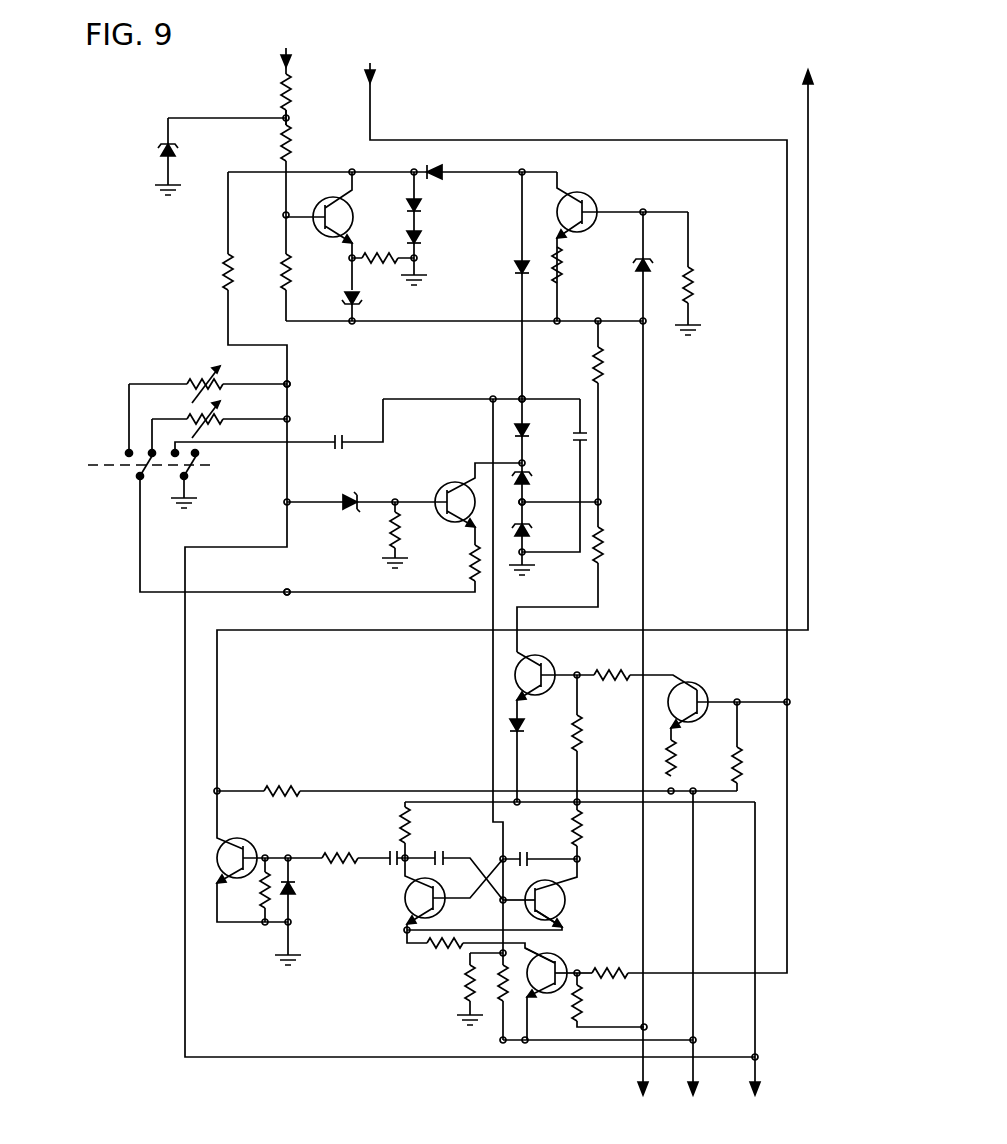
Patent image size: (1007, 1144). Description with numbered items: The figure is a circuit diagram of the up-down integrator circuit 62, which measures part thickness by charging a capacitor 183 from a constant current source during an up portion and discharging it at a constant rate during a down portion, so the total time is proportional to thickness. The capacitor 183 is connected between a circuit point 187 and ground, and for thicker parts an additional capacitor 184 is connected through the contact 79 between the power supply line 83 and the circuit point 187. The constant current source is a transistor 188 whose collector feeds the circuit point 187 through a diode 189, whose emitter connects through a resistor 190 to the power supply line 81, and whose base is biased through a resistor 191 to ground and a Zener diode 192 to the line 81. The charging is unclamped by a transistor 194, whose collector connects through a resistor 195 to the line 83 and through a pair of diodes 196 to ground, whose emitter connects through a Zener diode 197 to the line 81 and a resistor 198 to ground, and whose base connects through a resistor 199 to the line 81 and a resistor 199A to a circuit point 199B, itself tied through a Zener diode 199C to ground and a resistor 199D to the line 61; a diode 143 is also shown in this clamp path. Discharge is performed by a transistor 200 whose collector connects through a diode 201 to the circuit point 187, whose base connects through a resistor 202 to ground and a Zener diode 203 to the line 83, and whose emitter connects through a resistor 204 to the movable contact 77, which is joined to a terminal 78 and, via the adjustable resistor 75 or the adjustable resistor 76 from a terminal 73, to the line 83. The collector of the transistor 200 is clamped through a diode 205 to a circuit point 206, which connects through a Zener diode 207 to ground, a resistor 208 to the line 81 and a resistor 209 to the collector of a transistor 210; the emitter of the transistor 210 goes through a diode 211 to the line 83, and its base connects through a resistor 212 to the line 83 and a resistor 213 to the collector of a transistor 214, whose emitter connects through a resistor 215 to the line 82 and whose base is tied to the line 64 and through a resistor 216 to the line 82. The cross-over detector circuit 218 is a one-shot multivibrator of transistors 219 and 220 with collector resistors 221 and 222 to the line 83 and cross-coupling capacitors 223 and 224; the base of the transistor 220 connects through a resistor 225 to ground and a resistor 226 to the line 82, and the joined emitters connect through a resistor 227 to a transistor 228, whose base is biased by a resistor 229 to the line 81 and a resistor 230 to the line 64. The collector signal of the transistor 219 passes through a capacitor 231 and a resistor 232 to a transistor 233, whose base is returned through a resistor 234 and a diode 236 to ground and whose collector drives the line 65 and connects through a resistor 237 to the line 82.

The line 61 is at (283, 66).
The up-down integrator circuit 62 is at (92, 198).
The line 64 is at (372, 99).
The line 65 is at (805, 105).
The terminal 73 is at (291, 381).
The adjustable resistor 75 is at (190, 382).
The adjustable resistor 76 is at (190, 417).
The movable contact 77 is at (138, 478).
The terminal 78 is at (285, 590).
The contact 79 is at (187, 478).
The power supply line 81 is at (640, 1083).
The line 82 is at (691, 1083).
The power supply line 83 is at (753, 1083).
The diode 143 is at (436, 164).
The capacitor 183 is at (586, 440).
The capacitor 184 is at (340, 438).
The circuit point 187 is at (518, 394).
The transistor 188 is at (588, 198).
The diode 189 is at (516, 269).
The resistor 190 is at (562, 272).
The resistor 191 is at (700, 268).
The Zener diode 192 is at (637, 266).
The transistor 194 is at (341, 204).
The resistor 195 is at (225, 272).
The pair of diodes 196 is at (420, 238).
The Zener diode 197 is at (348, 292).
The resistor 198 is at (392, 254).
The resistor 199 is at (283, 268).
The resistor 199A is at (283, 143).
The circuit point 199B is at (288, 118).
The Zener diode 199C is at (162, 152).
The resistor 199D is at (288, 80).
The transistor 200 is at (462, 518).
The diode 201 is at (514, 430).
The resistor 202 is at (390, 530).
The Zener diode 203 is at (346, 494).
The resistor 204 is at (470, 565).
The diode 205 is at (516, 480).
The circuit point 206 is at (526, 500).
The Zener diode 207 is at (530, 530).
The resistor 208 is at (592, 358).
The resistor 209 is at (605, 546).
The transistor 210 is at (548, 665).
The diode 211 is at (525, 728).
The resistor 212 is at (581, 738).
The resistor 213 is at (600, 682).
The transistor 214 is at (690, 685).
The resistor 215 is at (676, 764).
The resistor 216 is at (740, 760).
The cross-over detector circuit 218 is at (358, 975).
The transistor 219 is at (404, 905).
The transistor 220 is at (560, 905).
The resistor 221 is at (411, 826).
The resistor 222 is at (583, 830).
The capacitor 223 is at (442, 852).
The capacitor 224 is at (521, 850).
The resistor 225 is at (464, 990).
The resistor 226 is at (498, 990).
The resistor 227 is at (442, 950).
The transistor 228 is at (562, 960).
The resistor 229 is at (583, 1000).
The resistor 230 is at (618, 978).
The capacitor 231 is at (387, 862).
The resistor 232 is at (338, 852).
The transistor 233 is at (226, 838).
The resistor 234 is at (264, 905).
The diode 236 is at (293, 894).
The resistor 237 is at (283, 785).